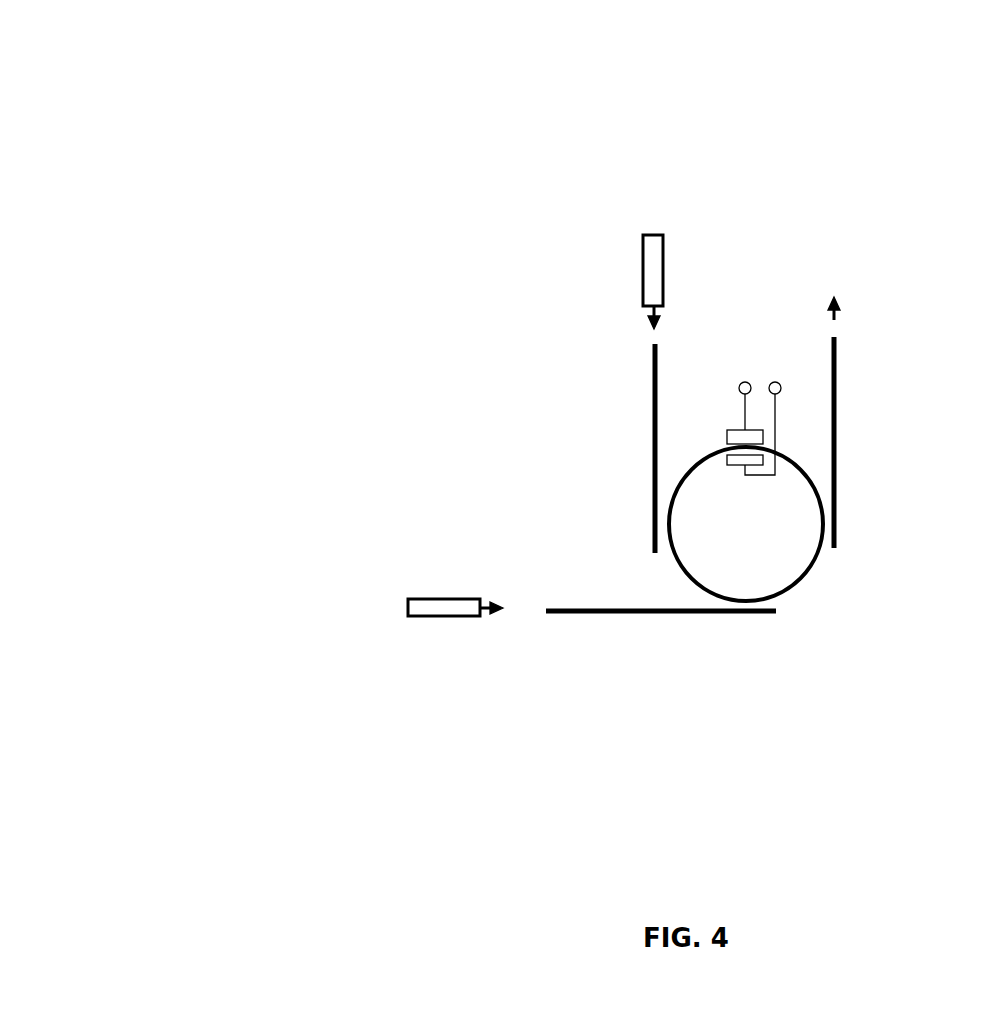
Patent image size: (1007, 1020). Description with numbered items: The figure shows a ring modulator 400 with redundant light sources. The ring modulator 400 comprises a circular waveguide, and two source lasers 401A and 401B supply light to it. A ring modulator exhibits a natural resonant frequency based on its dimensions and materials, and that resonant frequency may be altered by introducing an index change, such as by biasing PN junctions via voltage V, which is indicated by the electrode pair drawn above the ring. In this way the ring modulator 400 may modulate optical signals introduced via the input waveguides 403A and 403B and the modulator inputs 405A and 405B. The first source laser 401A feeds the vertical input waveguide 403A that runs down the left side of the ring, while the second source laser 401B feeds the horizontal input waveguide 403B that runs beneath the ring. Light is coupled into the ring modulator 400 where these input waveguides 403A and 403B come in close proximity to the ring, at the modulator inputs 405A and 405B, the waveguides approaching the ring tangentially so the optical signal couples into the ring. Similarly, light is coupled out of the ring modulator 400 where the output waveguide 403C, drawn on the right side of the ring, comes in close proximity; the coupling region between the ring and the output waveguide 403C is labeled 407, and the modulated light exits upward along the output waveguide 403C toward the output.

The ring modulator 400 is at (118, 52).
The source laser 401A is at (642, 273).
The source laser 401B is at (440, 598).
The input waveguide 403A is at (655, 388).
The input waveguide 403B is at (590, 622).
The output waveguide 403C is at (838, 381).
The modulator input 405A is at (658, 521).
The modulator input 405B is at (740, 604).
The third coupling region 407 is at (822, 521).